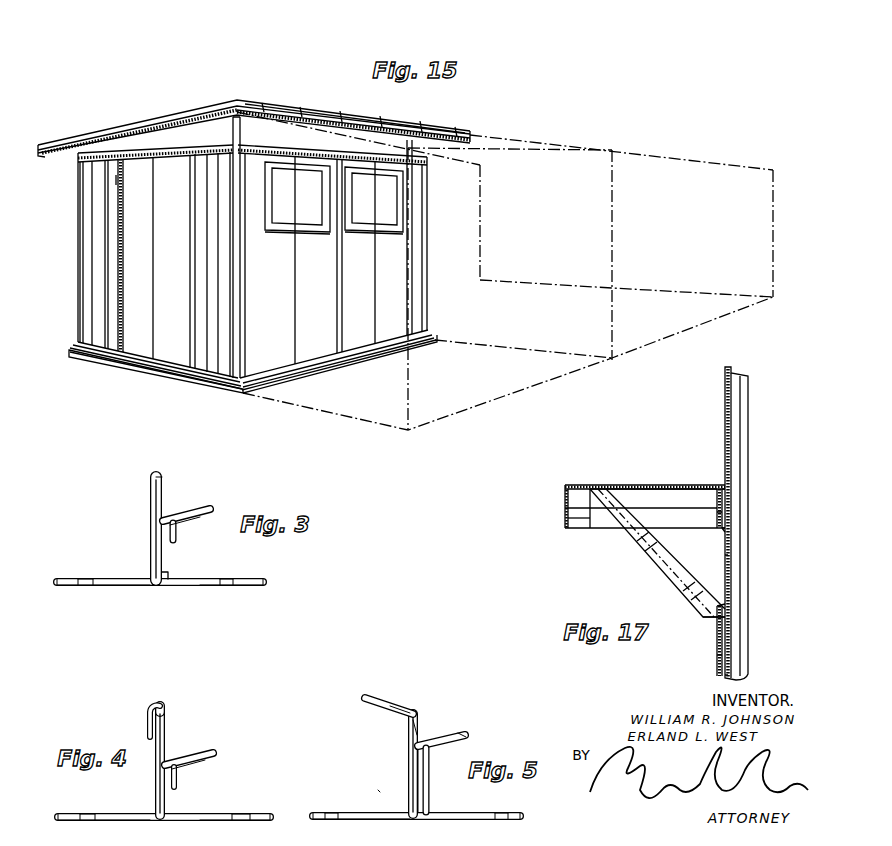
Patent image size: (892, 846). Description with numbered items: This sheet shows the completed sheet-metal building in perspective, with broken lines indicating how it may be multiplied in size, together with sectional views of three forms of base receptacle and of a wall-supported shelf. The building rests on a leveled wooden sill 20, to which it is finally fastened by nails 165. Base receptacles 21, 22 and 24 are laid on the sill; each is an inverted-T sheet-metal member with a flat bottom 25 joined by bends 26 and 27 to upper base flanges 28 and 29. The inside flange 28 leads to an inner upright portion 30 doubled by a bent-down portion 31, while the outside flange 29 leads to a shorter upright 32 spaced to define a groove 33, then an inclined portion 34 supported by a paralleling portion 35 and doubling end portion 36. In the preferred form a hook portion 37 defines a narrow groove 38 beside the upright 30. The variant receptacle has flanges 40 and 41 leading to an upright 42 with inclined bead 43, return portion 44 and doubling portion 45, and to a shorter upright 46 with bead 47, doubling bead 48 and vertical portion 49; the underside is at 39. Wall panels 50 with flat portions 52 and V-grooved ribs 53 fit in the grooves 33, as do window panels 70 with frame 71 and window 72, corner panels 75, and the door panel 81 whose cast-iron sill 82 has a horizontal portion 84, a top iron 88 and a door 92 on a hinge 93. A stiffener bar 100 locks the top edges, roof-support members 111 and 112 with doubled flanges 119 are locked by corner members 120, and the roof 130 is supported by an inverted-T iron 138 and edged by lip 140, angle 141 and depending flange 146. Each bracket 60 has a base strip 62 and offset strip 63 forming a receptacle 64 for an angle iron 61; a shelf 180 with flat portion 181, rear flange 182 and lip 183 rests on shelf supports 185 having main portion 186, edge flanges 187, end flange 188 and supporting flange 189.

In FIG. 15, the wooden sill 20 is at (311, 355).
In FIG. 15, the base receptacle 21 is at (185, 376).
In FIG. 3, the base receptacle 21 is at (228, 579).
In FIG. 15, the base receptacle 22 is at (358, 340).
In FIG. 4, the base receptacle 22 is at (262, 812).
In FIG. 5, the rear base receptacle 24 is at (378, 790).
In FIG. 3, the flat bottom 25 is at (183, 588).
In FIG. 4, the flat bottom 25 is at (176, 820).
In FIG. 5, the flat bottom 25 is at (443, 819).
In FIG. 3, the edge-defining bend 26 is at (56, 578).
In FIG. 4, the edge-defining bend 26 is at (58, 813).
In FIG. 5, the edge-defining bend 26 is at (315, 812).
In FIG. 3, the edge-defining bend 27 is at (268, 582).
In FIG. 4, the edge-defining bend 27 is at (269, 821).
In FIG. 5, the edge-defining bend 27 is at (522, 812).
In FIG. 3, the inside base flange 28 is at (112, 576).
In FIG. 4, the inside base flange 28 is at (90, 813).
In FIG. 3, the outside base flange 29 is at (266, 571).
In FIG. 4, the outside base flange 29 is at (220, 813).
In FIG. 3, the inner upright portion 30 is at (163, 498).
In FIG. 4, the inner upright portion 30 is at (167, 740).
In FIG. 3, the bent-down upright portion 31 is at (150, 507).
In FIG. 3, the outer shorter upright portion 32 is at (176, 569).
In FIG. 3, the groove 33 is at (155, 542).
In FIG. 4, the groove 33 is at (157, 794).
In FIG. 5, the groove 33 is at (408, 782).
In FIG. 15, the inclined portion 34 is at (73, 345).
In FIG. 3, the inclined portion 34 is at (195, 506).
In FIG. 4, the inclined portion 34 is at (198, 749).
In FIG. 3, the paralleling portion 35 is at (188, 522).
In FIG. 4, the paralleling portion 35 is at (210, 761).
In FIG. 3, the doubling end portion 36 is at (177, 536).
In FIG. 4, the doubling end portion 36 is at (180, 778).
In FIG. 4, the hook portion 37 is at (146, 720).
In FIG. 4, the narrow groove 38 is at (166, 716).
In FIG. 3, the base flange underside 39 is at (140, 588).
In FIG. 4, the base flange underside 39 is at (124, 821).
In FIG. 5, the base flange underside 39 is at (386, 820).
In FIG. 5, the upper base flange 40 is at (352, 812).
In FIG. 5, the upper base flange 41 is at (474, 812).
In FIG. 5, the upright portion 42 is at (407, 744).
In FIG. 5, the inclined bead portion 43 is at (372, 706).
In FIG. 5, the return portion 44 is at (390, 700).
In FIG. 5, the downwardly extending doubling portion 45 is at (420, 731).
In FIG. 5, the shorter upright portion 46 is at (430, 792).
In FIG. 5, the bead portion 47 is at (461, 745).
In FIG. 5, the doubling bead portion 48 is at (463, 731).
In FIG. 5, the doubling vertical portion 49 is at (408, 762).
In FIG. 17, the solid wall panel 50 is at (751, 403).
In FIG. 17, the flat panel portion 52 is at (724, 432).
In FIG. 17, the V-grooved rib 53 is at (742, 433).
In FIG. 17, the locking bracket 60 is at (722, 531).
In FIG. 17, the angle iron 61 is at (692, 491).
In FIG. 17, the base strip 62 is at (724, 556).
In FIG. 17, the offset strip 63 is at (716, 520).
In FIG. 17, the receptacle 64 is at (724, 487).
In FIG. 15, the window panel 70 is at (310, 297).
In FIG. 15, the window frame 71 is at (366, 228).
In FIG. 15, the window 72 is at (284, 207).
In FIG. 15, the corner panel 75 is at (76, 264).
In FIG. 15, the door panel 81 is at (116, 308).
In FIG. 15, the bottom sill 82 is at (136, 348).
In FIG. 15, the horizontal portion 84 is at (97, 357).
In FIG. 15, the top iron 88 is at (143, 166).
In FIG. 15, the door 92 is at (159, 275).
In FIG. 15, the hinge 93 is at (120, 266).
In FIG. 15, the stiffener bar 100 is at (76, 158).
In FIG. 15, the roof-support member 111 is at (311, 146).
In FIG. 15, the roof-support member 112 is at (171, 146).
In FIG. 15, the horizontal doubled flange 119 is at (174, 119).
In FIG. 15, the corner locking member 120 is at (242, 139).
In FIG. 15, the roof 130 is at (220, 101).
In FIG. 15, the inverted T-shaped iron 138 is at (330, 121).
In FIG. 15, the lip 140 is at (131, 123).
In FIG. 15, the sheet-metal angle 141 is at (296, 106).
In FIG. 15, the depending rectangular flange 146 is at (199, 108).
In FIG. 15, the nail 165 is at (150, 366).
In FIG. 17, the shelf 180 is at (625, 484).
In FIG. 17, the flat shelf portion 181 is at (665, 485).
In FIG. 17, the rear flange 182 is at (733, 503).
In FIG. 17, the down-turned lip 183 is at (565, 518).
In FIG. 17, the shelf support 185 is at (683, 585).
In FIG. 17, the main portion 186 is at (651, 546).
In FIG. 17, the edge flange 187 is at (642, 561).
In FIG. 17, the end flange 188 is at (722, 634).
In FIG. 17, the supporting flange 189 is at (564, 499).